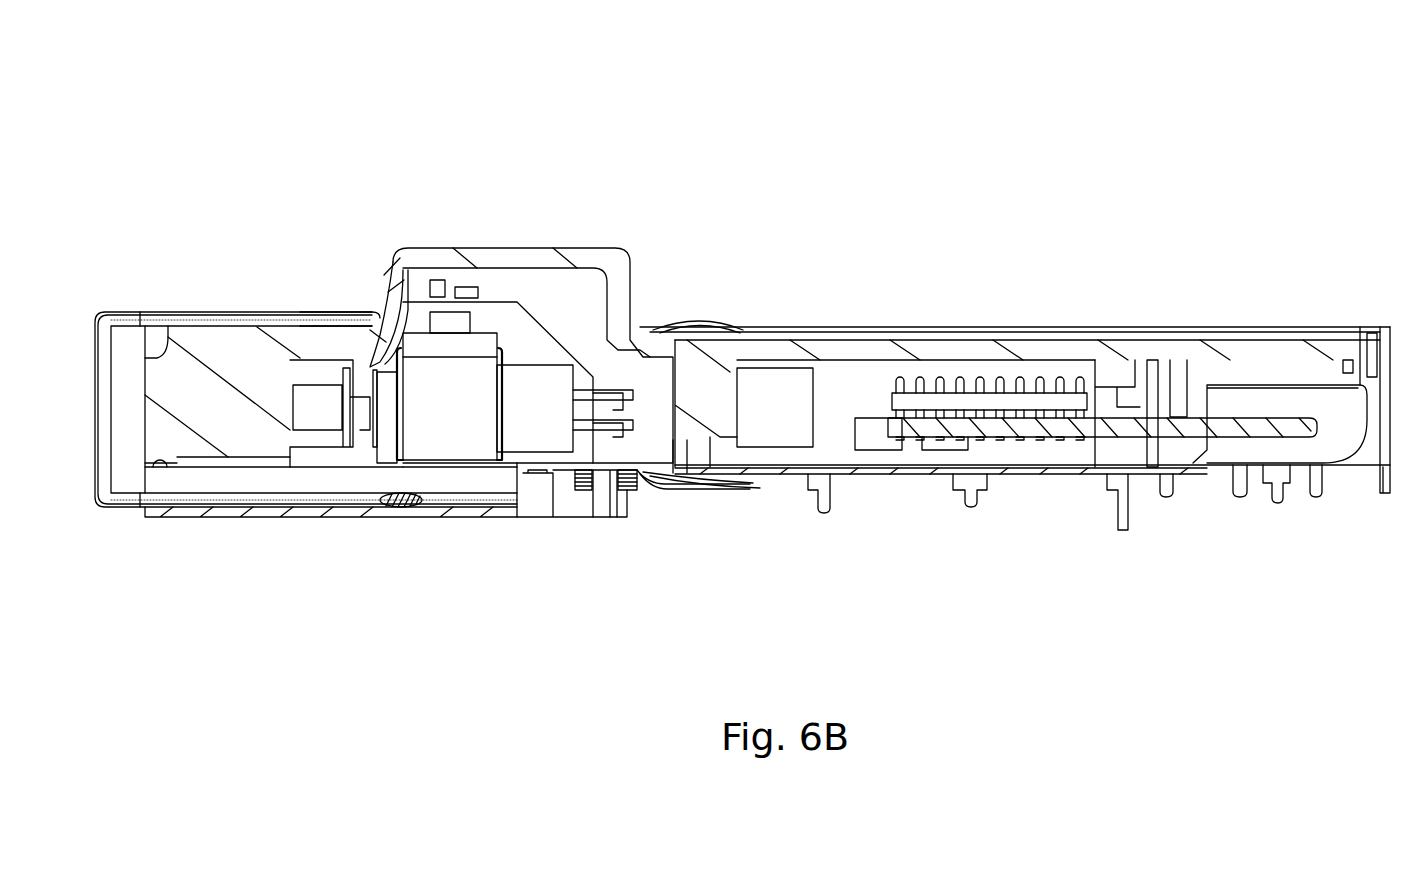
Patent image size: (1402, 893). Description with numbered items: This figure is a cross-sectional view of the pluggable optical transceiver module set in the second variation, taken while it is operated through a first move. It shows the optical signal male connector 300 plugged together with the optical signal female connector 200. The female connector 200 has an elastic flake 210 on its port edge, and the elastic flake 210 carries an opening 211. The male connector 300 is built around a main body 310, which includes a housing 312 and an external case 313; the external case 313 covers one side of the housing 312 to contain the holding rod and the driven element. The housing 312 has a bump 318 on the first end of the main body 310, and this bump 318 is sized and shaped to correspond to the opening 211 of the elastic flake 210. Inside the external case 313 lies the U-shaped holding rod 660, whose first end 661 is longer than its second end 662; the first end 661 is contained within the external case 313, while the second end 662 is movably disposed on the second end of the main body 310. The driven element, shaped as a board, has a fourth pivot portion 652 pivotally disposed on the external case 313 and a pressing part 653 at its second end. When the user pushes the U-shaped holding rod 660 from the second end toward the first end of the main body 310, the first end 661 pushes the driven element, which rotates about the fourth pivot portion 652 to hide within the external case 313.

The optical signal female connector 200 is at (1149, 280).
The elastic flake 210 is at (652, 493).
The opening 211 is at (713, 493).
The optical signal male connector 300 is at (493, 190).
The main body 310 is at (590, 250).
The housing 312 is at (403, 247).
The external case 313 is at (230, 512).
The bump 318 is at (687, 493).
The fourth pivot portion 652 is at (600, 493).
The pressing part 653 is at (547, 493).
The U-shaped holding rod 660 is at (117, 308).
The first end 661 is at (352, 497).
The second end 662 is at (325, 313).